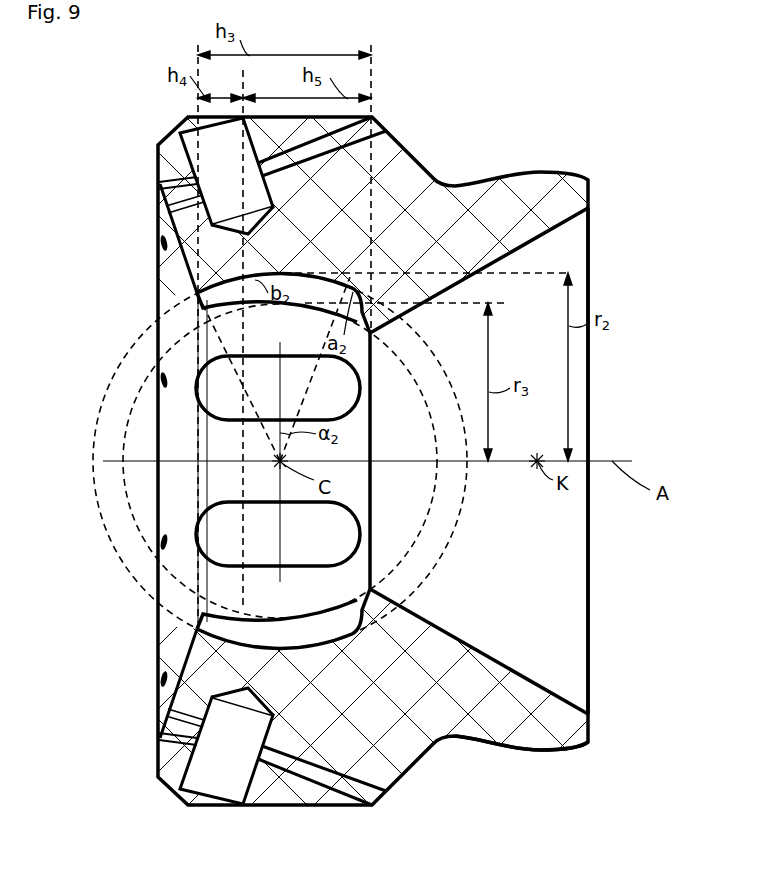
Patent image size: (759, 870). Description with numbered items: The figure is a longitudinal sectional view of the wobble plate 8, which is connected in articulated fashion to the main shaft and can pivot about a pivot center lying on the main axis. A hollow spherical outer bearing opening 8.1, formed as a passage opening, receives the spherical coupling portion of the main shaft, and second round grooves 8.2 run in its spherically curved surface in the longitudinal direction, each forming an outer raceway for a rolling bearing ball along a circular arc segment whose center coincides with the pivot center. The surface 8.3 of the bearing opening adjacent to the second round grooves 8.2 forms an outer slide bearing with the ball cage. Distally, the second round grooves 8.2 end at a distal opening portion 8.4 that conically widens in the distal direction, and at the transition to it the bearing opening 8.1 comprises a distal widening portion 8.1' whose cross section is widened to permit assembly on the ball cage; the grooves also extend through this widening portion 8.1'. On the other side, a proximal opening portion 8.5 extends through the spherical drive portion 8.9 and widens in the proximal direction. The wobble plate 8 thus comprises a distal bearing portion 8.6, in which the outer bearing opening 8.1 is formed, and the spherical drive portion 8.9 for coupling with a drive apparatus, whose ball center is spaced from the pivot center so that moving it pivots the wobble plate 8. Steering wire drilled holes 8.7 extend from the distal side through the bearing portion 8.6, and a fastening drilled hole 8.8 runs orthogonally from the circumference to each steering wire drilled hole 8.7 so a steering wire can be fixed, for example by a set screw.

The wobble plate 8 is at (112, 118).
The hollow spherical outer bearing opening 8.1 is at (278, 461).
The distal widening portion 8.1' is at (134, 438).
The second round grooves 8.2 is at (198, 296).
The surface of the hollow spherical bearing opening 8.3 is at (371, 338).
The distal opening portion 8.4 is at (180, 600).
The proximal opening portion 8.5 is at (567, 598).
The distal bearing portion 8.6 is at (300, 783).
The steering wire drilled holes 8.7 is at (163, 681).
The fastening drilled hole 8.8 is at (222, 782).
The spherical drive portion 8.9 is at (541, 736).